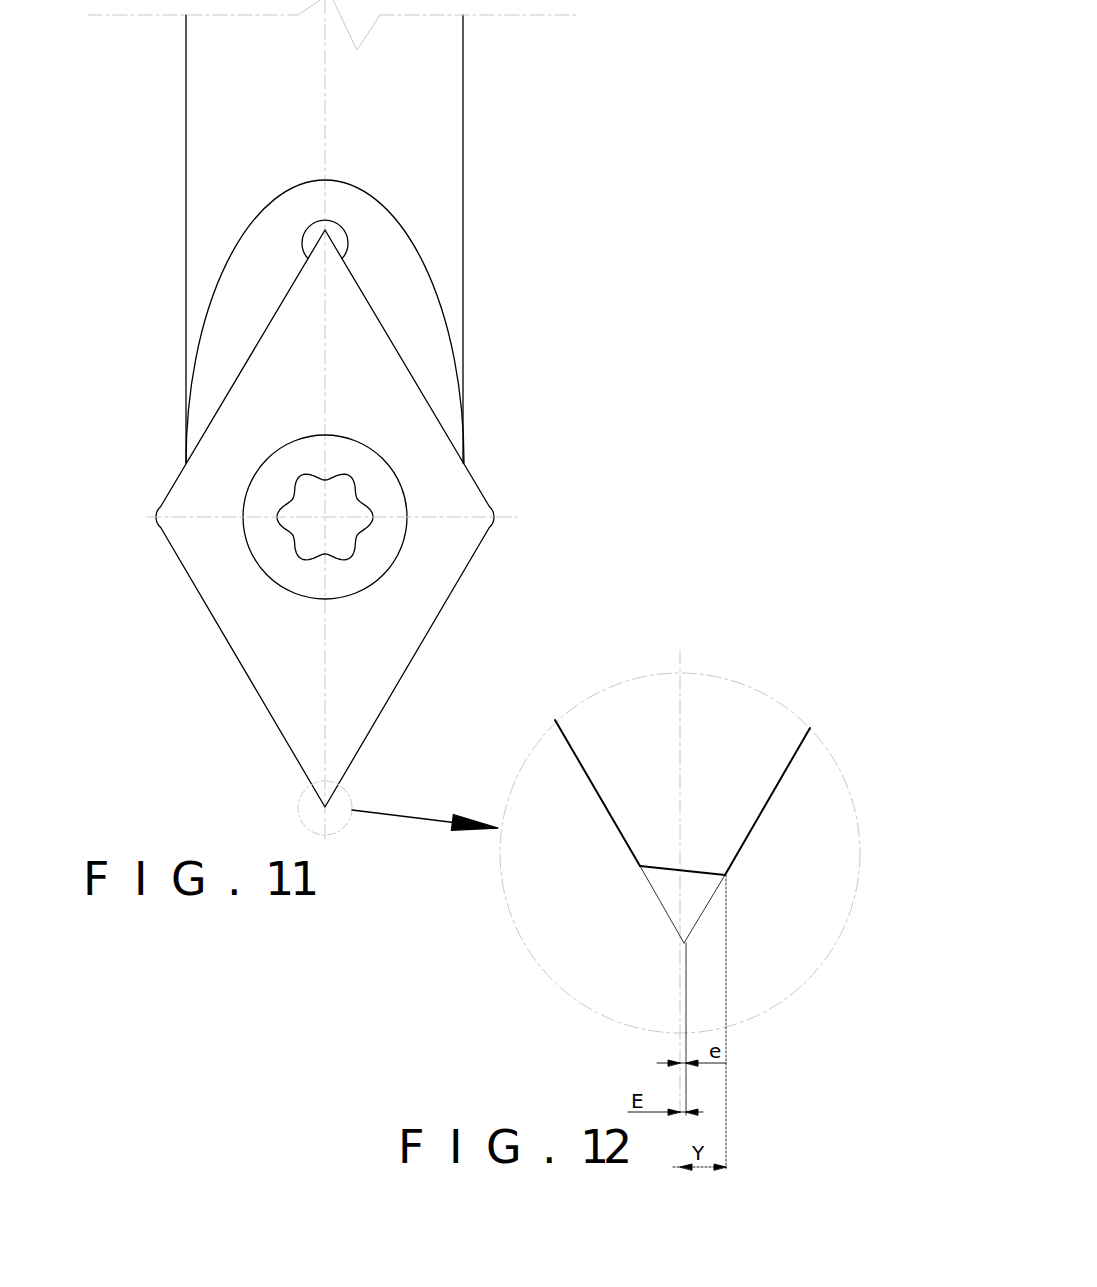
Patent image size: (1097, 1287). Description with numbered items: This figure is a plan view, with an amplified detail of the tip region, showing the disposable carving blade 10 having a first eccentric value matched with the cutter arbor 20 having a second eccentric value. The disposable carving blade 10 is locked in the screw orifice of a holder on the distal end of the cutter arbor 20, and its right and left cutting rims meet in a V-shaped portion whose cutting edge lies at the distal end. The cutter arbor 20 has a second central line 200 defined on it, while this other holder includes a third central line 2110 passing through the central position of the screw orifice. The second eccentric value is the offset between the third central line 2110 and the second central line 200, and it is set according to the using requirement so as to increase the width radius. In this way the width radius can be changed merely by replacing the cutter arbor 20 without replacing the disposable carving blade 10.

In FIG. 11, the second central line 200 is at (325, 57).
In FIG. 12, the second central line 200 is at (673, 630).
In FIG. 11, the cutter arbor 20 is at (457, 263).
In FIG. 11, the disposable carving blade 10 is at (260, 403).
In FIG. 12, the disposable carving blade 10 is at (743, 762).
In FIG. 12, the third central line 2110 is at (682, 723).